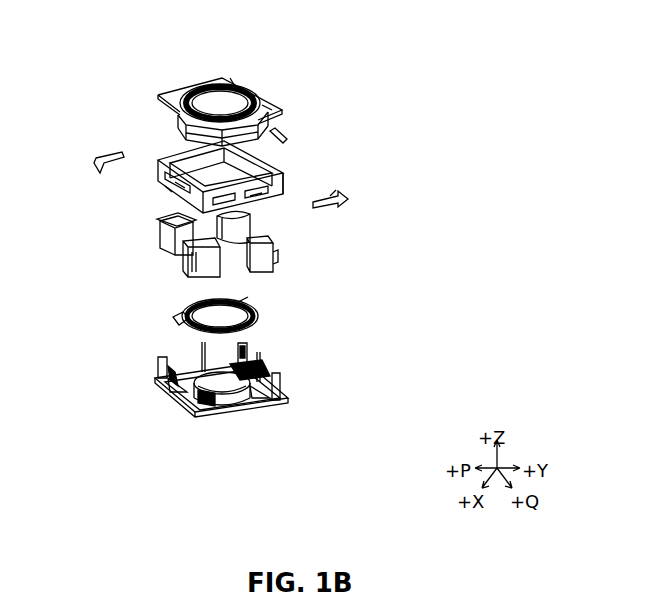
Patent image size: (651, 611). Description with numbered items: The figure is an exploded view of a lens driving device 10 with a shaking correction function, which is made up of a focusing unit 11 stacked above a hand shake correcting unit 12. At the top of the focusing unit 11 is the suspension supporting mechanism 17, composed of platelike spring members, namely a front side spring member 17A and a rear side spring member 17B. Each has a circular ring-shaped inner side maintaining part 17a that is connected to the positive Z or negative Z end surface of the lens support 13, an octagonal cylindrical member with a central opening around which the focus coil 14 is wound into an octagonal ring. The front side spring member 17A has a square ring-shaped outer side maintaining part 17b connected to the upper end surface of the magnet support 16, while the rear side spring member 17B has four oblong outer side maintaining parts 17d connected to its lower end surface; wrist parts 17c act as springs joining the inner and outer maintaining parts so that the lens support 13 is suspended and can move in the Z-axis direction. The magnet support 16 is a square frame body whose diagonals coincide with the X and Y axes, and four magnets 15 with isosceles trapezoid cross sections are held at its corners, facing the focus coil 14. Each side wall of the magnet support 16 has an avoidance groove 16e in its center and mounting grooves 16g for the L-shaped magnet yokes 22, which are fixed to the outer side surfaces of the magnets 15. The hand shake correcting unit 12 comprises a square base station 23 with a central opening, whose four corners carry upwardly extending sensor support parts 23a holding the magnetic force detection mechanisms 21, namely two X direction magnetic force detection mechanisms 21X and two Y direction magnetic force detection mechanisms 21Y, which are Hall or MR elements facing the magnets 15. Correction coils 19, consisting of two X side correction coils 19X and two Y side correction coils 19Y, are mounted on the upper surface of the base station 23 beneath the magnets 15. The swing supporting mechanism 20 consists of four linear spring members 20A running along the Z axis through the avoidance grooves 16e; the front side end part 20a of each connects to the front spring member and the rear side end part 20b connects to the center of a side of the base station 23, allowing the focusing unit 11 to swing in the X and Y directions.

The lens driving device 10 is at (90, 43).
The focusing unit 11 is at (393, 100).
The hand shake correcting unit 12 is at (450, 367).
The lens support 13 is at (185, 135).
The focus coil 14 is at (270, 130).
The magnet 15 is at (272, 232).
The magnet support 16 is at (262, 175).
The avoidance groove 16e is at (170, 190).
The mounting groove 16g is at (290, 186).
The suspension supporting mechanism 17 is at (221, 194).
The front side spring member 17A is at (165, 95).
The rear side spring member 17B is at (258, 318).
The inner side maintaining part 17a is at (200, 90).
The outer side maintaining part 17b is at (262, 104).
The wrist part 17c is at (238, 88).
The oblong outer side maintaining part 17d is at (178, 320).
The correction coil 19 is at (225, 399).
The X side correction coil 19X is at (258, 352).
The Y side correction coil 19Y is at (165, 380).
The swing supporting mechanism 20 is at (168, 415).
The linear spring member 20A is at (200, 400).
The front side end part 20a is at (160, 366).
The rear side end part 20b is at (218, 420).
The magnetic force detection mechanism 21 is at (221, 247).
The X direction magnetic force detection mechanism 21X is at (160, 238).
The Y direction magnetic force detection mechanism 21Y is at (184, 268).
The magnet yoke 22 is at (344, 206).
The base station 23 is at (250, 412).
The sensor support part 23a is at (283, 380).